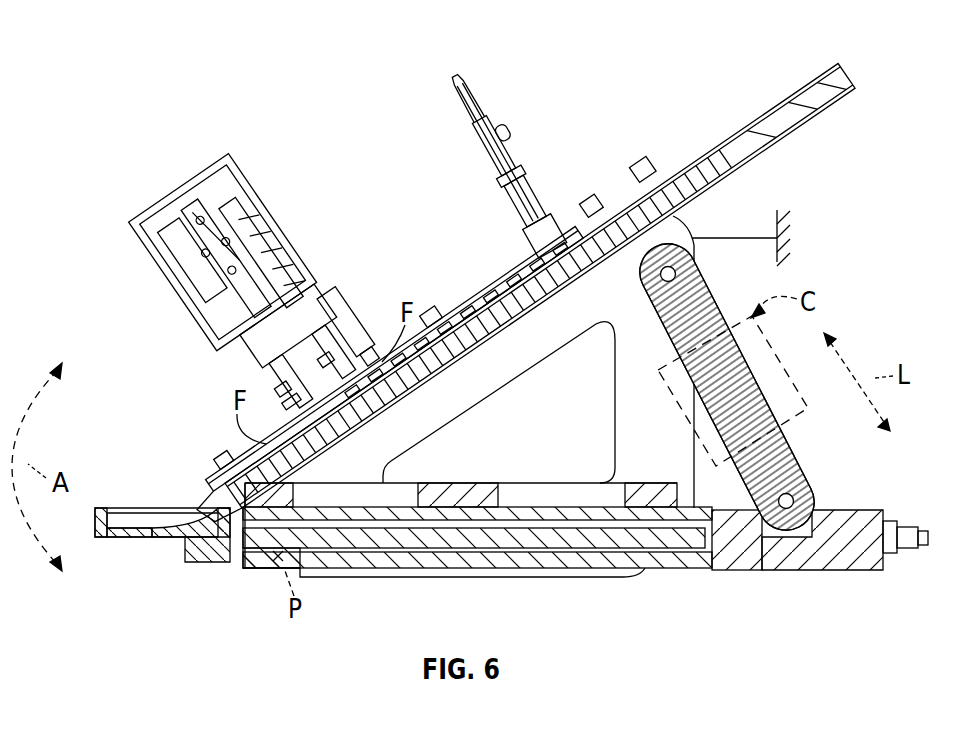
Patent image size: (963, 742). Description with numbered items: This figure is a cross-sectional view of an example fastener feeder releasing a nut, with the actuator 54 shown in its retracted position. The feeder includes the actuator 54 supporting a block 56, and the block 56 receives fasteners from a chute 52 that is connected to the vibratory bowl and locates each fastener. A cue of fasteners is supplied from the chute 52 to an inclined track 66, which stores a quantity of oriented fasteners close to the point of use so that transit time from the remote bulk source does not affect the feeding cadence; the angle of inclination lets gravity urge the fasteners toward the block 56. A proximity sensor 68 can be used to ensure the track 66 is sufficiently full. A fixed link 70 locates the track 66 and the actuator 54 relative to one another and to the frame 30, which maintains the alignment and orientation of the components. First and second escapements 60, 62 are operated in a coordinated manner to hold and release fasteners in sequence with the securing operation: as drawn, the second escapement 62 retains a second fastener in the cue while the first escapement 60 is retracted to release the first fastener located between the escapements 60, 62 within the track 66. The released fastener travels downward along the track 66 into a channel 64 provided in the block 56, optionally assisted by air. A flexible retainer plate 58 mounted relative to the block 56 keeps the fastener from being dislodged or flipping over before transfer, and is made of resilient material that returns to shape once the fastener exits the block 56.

The frame 30 is at (775, 232).
The chute 52 is at (515, 283).
The actuator 54 is at (464, 566).
The block 56 is at (205, 562).
The flexible retainer plate 58 is at (148, 508).
The first escapement 60 is at (224, 254).
The second escapement 62 is at (311, 345).
The channel 64 is at (166, 527).
The track 66 is at (308, 381).
The proximity sensor 68 is at (505, 162).
The fixed link 70 is at (796, 470).